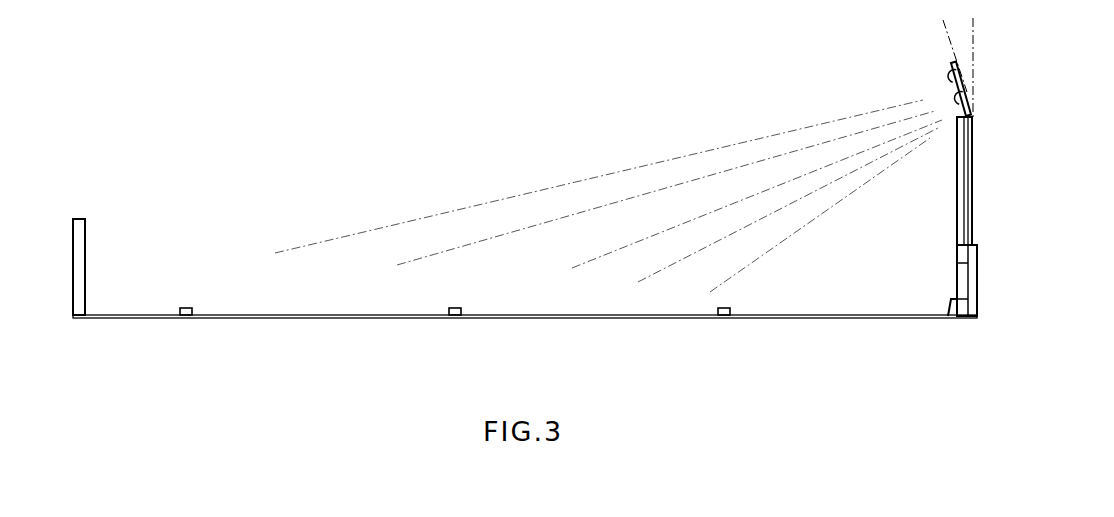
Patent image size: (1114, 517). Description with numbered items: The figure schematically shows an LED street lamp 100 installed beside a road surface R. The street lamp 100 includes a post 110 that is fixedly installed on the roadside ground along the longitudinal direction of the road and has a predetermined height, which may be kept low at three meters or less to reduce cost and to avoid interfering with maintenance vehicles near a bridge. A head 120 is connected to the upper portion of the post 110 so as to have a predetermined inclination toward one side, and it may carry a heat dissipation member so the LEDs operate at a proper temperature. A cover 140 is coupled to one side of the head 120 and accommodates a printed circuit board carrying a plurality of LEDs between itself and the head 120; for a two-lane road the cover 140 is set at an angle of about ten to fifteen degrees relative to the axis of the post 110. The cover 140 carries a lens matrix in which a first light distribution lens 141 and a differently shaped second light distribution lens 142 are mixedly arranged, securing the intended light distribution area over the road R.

The LED street lamp 100 is at (929, 163).
The post 110 is at (962, 216).
The head 120 is at (951, 65).
The cover 140 is at (903, 63).
The first light distribution lens 141 is at (963, 94).
The second light distribution lens 142 is at (947, 75).
The illuminated region / floor R is at (678, 316).